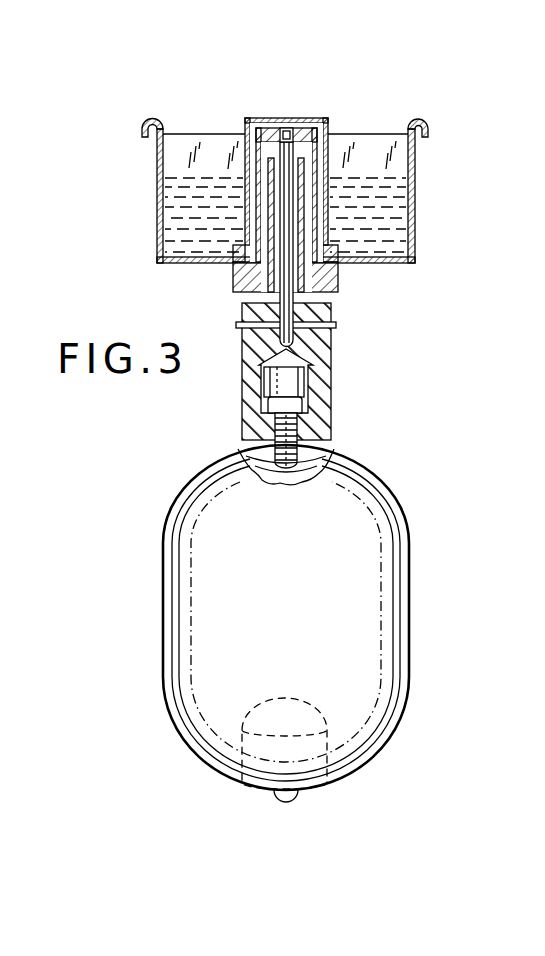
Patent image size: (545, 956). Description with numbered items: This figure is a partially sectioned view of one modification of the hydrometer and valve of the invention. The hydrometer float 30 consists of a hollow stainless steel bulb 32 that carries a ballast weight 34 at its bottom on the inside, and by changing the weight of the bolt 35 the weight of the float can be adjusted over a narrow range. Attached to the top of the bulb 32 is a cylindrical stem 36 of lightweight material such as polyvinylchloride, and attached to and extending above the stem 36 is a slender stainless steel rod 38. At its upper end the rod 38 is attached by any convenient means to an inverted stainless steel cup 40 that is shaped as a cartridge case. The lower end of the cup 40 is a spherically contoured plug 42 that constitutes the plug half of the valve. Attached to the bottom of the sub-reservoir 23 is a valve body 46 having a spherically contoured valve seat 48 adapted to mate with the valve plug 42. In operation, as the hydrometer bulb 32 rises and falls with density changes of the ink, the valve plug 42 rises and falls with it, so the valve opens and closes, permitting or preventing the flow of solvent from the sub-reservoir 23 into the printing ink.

The sub-reservoir 23 is at (415, 167).
The hydrometer float 30 is at (360, 440).
The bulb 32 is at (392, 553).
The ballast weight 34 is at (287, 698).
The bolt 35 is at (286, 468).
The cylindrical stem 36 is at (244, 404).
The rod 38 is at (316, 255).
The inverted cup 40 is at (300, 131).
The valve plug 42 is at (320, 243).
The valve body 46 is at (287, 258).
The valve seat 48 is at (256, 250).